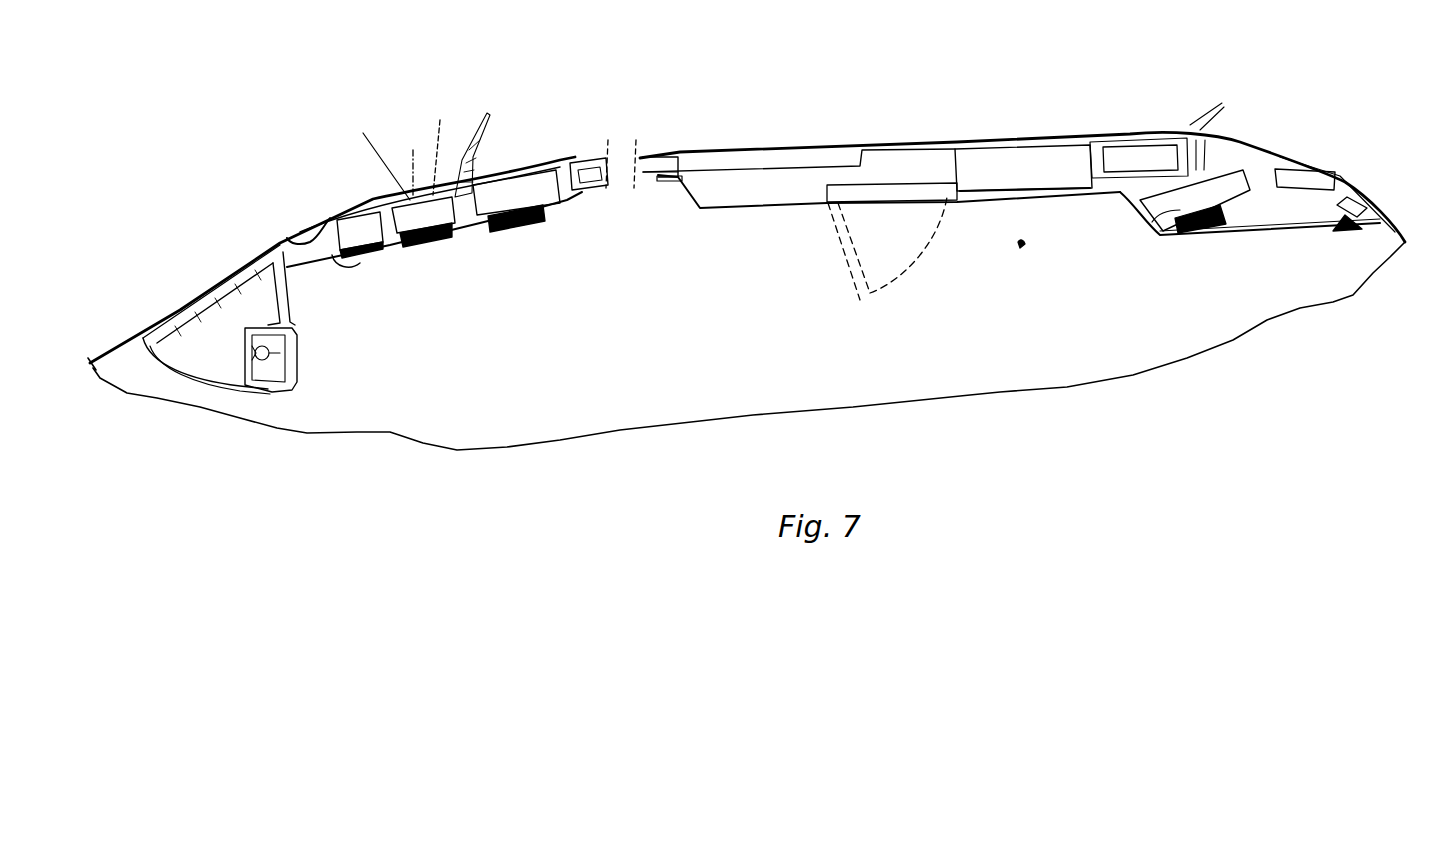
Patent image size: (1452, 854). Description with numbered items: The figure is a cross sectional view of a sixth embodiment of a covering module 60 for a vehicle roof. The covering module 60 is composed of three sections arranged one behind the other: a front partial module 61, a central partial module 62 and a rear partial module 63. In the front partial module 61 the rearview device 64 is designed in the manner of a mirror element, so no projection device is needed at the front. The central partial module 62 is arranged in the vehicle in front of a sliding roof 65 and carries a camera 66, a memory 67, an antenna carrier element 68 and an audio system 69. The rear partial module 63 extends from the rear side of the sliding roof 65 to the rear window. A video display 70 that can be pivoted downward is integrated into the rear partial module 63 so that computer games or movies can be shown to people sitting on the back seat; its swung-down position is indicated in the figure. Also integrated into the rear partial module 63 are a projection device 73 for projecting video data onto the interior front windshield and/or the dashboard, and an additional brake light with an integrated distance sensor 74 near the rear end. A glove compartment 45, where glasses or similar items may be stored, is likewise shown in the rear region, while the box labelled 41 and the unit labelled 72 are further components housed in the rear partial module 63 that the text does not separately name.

The control unit box 41 is at (1020, 158).
The glove compartment 45 is at (1293, 178).
The covering module 60 is at (742, 360).
The front partial module 61 is at (218, 390).
The central partial module 62 is at (478, 251).
The rear partial module 63 is at (1022, 243).
The rearview device 64 is at (292, 356).
The sliding roof 65 is at (648, 163).
The camera 66 is at (355, 268).
The memory 67 is at (356, 232).
The antenna carrier element 68 is at (427, 197).
The audio system 69 is at (510, 196).
The video display 70 is at (849, 258).
The rear unit 72 is at (1152, 150).
The projection device 73 is at (1162, 218).
The additional brake light with integrated distance sensor 74 is at (1347, 209).